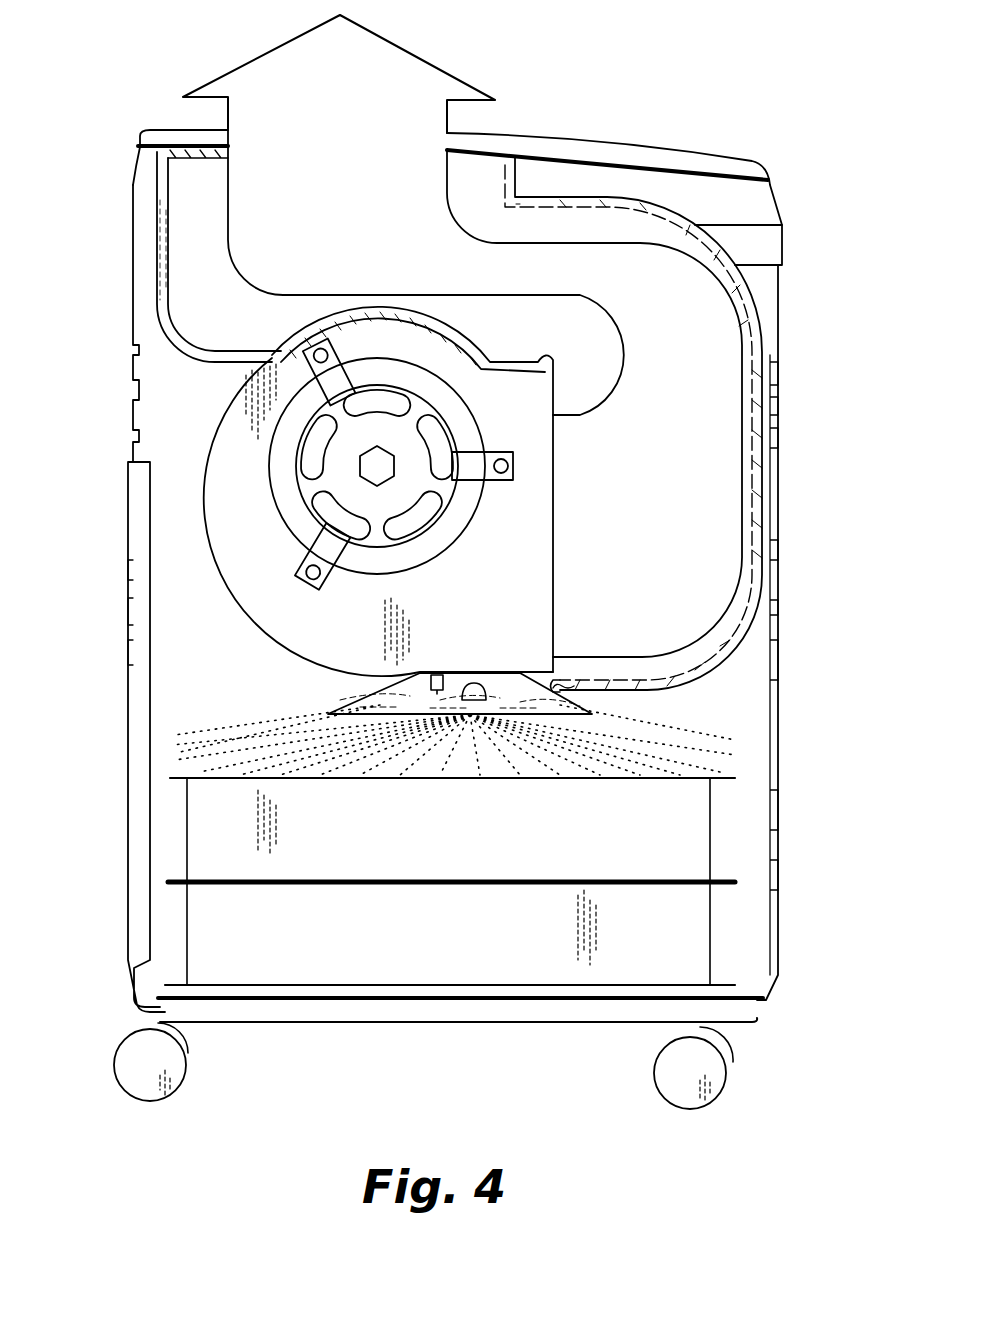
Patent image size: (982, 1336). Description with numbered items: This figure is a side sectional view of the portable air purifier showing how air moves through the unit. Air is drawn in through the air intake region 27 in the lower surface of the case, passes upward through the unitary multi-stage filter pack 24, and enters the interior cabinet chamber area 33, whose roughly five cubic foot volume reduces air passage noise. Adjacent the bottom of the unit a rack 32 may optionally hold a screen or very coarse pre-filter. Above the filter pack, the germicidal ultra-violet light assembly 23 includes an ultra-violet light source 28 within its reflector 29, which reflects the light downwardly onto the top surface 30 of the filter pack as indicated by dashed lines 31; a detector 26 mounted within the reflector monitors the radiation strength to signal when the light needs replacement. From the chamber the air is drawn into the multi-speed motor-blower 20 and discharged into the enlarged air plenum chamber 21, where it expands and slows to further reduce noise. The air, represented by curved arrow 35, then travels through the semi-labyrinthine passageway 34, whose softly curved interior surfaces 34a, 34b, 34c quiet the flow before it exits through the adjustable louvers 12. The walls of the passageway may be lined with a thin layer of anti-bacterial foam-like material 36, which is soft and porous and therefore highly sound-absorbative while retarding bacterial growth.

The air exit grill 12 is at (208, 127).
The motor-blower 20 is at (437, 547).
The air plenum chamber 21 is at (305, 610).
The germicidal ultra-violet light assembly 23 is at (508, 675).
The multi-stage filter pack 24 is at (468, 935).
The detector 26 is at (449, 672).
The air intake region 27 is at (412, 1032).
The ultra-violet light source 28 is at (560, 693).
The reflector 29 is at (372, 694).
The top surface 30 is at (242, 760).
The dashed lines 31 is at (560, 752).
The rack 32 is at (718, 1012).
The interior cabinet chamber area 33 is at (172, 426).
The semi-labyrinthine passageway 34 is at (527, 342).
The curved interior surface 34a is at (183, 340).
The curved interior surface 34b is at (752, 291).
The curved interior surface 34c is at (702, 660).
The curved arrow 35 is at (358, 228).
The layer of anti-bacterial foam-like material 36 is at (238, 355).